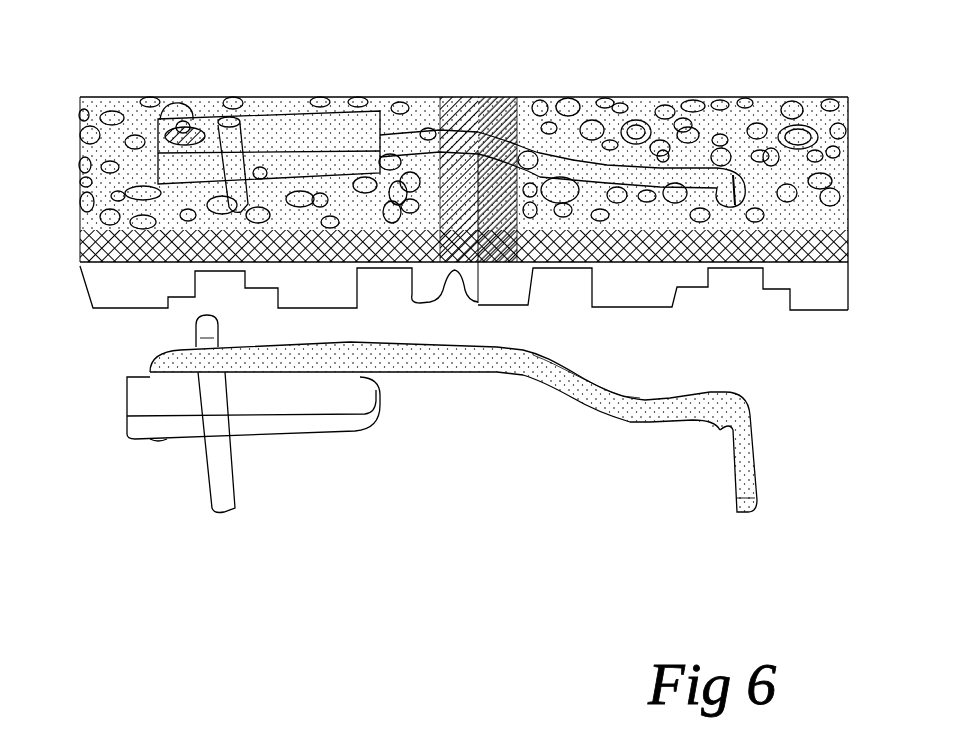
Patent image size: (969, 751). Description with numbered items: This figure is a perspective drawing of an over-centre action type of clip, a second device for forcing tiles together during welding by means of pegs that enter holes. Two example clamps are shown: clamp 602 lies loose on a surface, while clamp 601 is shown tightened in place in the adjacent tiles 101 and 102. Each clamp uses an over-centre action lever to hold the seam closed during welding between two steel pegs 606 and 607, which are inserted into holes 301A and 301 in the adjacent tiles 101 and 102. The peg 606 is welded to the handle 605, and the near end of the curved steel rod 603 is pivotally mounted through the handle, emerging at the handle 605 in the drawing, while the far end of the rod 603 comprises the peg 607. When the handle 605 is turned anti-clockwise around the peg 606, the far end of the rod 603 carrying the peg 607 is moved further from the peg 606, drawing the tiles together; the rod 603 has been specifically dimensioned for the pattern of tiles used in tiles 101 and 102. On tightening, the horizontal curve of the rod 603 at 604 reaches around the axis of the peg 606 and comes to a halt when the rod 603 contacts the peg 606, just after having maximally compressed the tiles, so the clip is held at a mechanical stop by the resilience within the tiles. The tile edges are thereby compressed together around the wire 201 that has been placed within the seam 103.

The tile 101 is at (338, 281).
The tile 102 is at (653, 279).
The seam 103 is at (478, 98).
The wire 201 is at (417, 293).
The hole 301 is at (748, 210).
The hole 301A is at (250, 182).
The clamp 601 is at (282, 101).
The clamp 602 is at (88, 400).
The curved steel rod 603 is at (560, 392).
The horizontal curve of rod 604 is at (191, 332).
The handle 605 is at (160, 441).
The peg 606 is at (236, 490).
The peg 607 is at (763, 467).